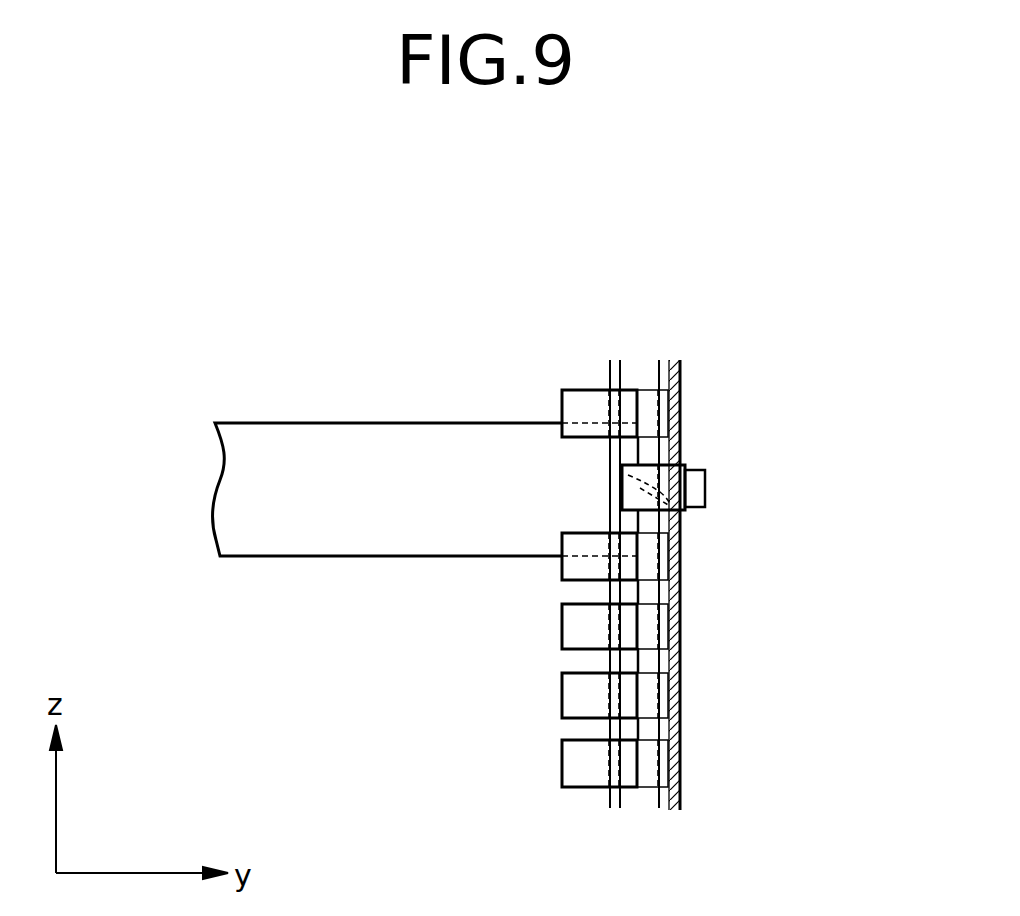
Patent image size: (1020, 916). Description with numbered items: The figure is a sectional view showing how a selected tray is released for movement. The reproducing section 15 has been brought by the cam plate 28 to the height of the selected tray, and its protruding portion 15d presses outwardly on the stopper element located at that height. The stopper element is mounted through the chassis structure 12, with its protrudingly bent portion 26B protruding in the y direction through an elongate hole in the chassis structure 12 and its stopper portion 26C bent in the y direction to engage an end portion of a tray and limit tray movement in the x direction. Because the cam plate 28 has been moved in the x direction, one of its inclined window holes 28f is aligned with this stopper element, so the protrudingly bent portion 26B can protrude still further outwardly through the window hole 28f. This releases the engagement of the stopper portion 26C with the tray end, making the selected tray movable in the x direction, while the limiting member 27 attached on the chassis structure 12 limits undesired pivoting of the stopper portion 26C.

The reproducing section 15 is at (337, 511).
The protruding portion 15d is at (605, 467).
The window hole 28f is at (688, 456).
The protrudingly bent portion 26B is at (682, 553).
The stopper portion 26C is at (580, 628).
The cam plate 28 is at (683, 726).
The limiting member 27 is at (610, 794).
The chassis structure 12 is at (659, 808).